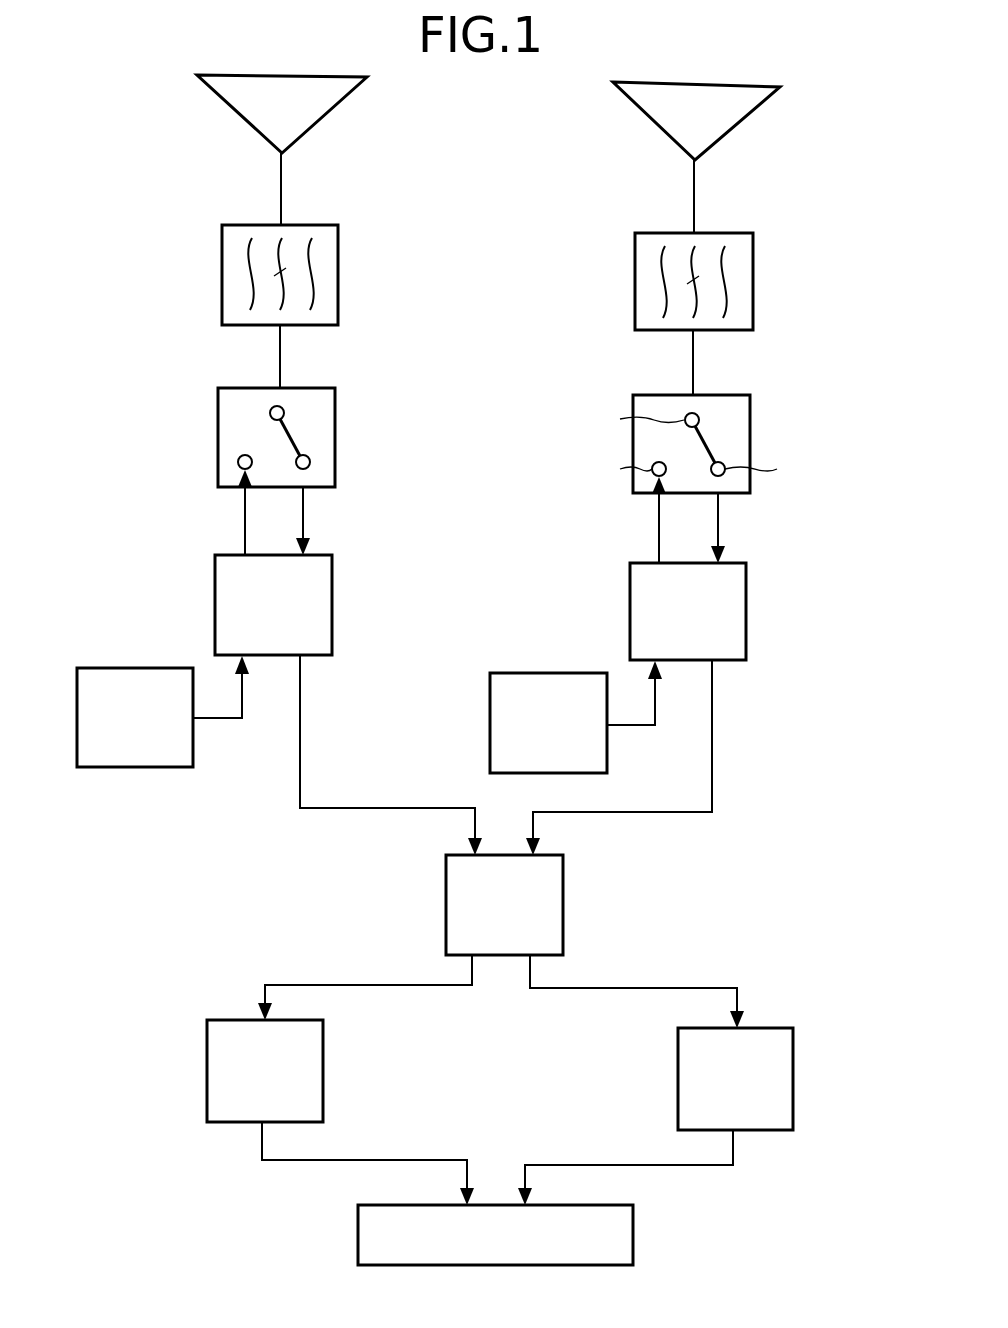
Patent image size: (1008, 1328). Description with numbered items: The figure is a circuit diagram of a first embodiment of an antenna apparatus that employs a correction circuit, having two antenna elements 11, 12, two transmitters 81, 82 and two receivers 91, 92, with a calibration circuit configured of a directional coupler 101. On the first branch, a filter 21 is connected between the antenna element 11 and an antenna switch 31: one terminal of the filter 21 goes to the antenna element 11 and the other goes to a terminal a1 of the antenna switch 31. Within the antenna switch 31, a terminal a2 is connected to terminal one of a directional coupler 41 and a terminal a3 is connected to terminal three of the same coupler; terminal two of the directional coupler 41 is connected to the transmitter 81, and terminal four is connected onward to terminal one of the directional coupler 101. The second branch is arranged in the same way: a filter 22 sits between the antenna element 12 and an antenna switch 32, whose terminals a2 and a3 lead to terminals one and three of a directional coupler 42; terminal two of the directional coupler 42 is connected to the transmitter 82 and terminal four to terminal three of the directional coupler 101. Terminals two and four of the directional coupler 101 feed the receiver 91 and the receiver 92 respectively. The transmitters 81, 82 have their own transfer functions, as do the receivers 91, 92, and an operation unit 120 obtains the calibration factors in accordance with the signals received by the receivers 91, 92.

The antenna element 11 is at (338, 108).
The antenna element 12 is at (750, 116).
The filter 21 is at (338, 272).
The filter 22 is at (753, 282).
The antenna switch 31 is at (285, 437).
The antenna switch 32 is at (750, 420).
The terminal a1 is at (270, 413).
The terminal a2 is at (238, 462).
The terminal a3 is at (310, 462).
The directional coupler 41 is at (332, 605).
The directional coupler 42 is at (746, 612).
The transmitter 81 is at (133, 668).
The transmitter 82 is at (550, 673).
The directional coupler 101 is at (563, 905).
The receiver 91 is at (323, 1072).
The receiver 92 is at (793, 1080).
The operation unit 120 is at (633, 1240).